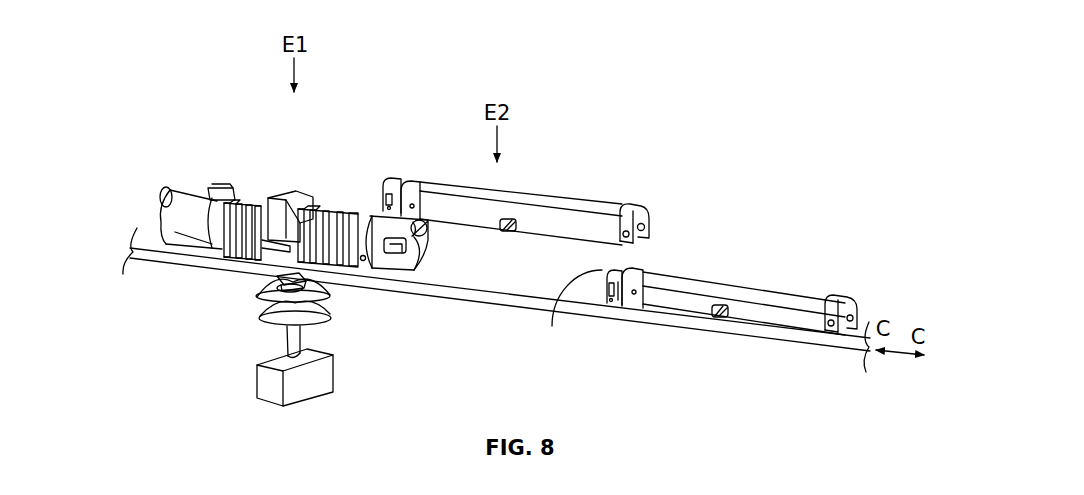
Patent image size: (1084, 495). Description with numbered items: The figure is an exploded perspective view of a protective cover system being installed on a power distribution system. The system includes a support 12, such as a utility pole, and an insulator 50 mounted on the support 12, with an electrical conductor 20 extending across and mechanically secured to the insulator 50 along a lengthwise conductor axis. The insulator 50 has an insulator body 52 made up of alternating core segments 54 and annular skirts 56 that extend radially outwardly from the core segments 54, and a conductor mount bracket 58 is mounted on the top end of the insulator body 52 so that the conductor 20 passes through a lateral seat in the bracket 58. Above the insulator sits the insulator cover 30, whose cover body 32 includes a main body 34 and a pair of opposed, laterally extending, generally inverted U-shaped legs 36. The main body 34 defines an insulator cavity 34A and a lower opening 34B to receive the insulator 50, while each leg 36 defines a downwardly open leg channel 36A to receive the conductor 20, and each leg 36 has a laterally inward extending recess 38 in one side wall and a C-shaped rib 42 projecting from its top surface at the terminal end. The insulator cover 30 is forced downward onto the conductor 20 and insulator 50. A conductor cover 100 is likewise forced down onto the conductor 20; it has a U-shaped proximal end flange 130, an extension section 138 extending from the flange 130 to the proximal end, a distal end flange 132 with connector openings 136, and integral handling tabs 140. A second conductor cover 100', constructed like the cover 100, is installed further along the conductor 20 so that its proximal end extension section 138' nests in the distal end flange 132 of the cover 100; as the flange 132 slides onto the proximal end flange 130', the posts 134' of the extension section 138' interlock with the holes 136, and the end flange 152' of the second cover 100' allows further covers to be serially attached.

The support 12 is at (263, 391).
The electrical conductor 20 is at (778, 338).
The insulator cover 30 is at (233, 197).
The cover body 32 is at (224, 208).
The main body 34 is at (290, 193).
The insulator cavity 34A is at (243, 266).
The lower opening 34B is at (243, 266).
The leg 36 is at (314, 237).
The leg channel 36A is at (430, 249).
The recess 38 is at (398, 252).
The rib 42 is at (170, 197).
The insulator 50 is at (180, 331).
The insulator body 52 is at (299, 326).
The core segment 54 is at (281, 305).
The annular skirt 56 is at (273, 323).
The conductor mount bracket 58 is at (273, 290).
The conductor cover 100 is at (539, 193).
The second conductor cover 100' is at (692, 309).
The proximal end flange 130 is at (426, 172).
The proximal end flange 130' is at (621, 319).
The distal end flange 132 is at (632, 206).
The connector post 134' is at (588, 336).
The connector opening 136 is at (645, 227).
The extension section 138 is at (379, 169).
The extension section 138' is at (573, 313).
The handling tab 140 is at (510, 232).
The end clamp 152' is at (818, 342).